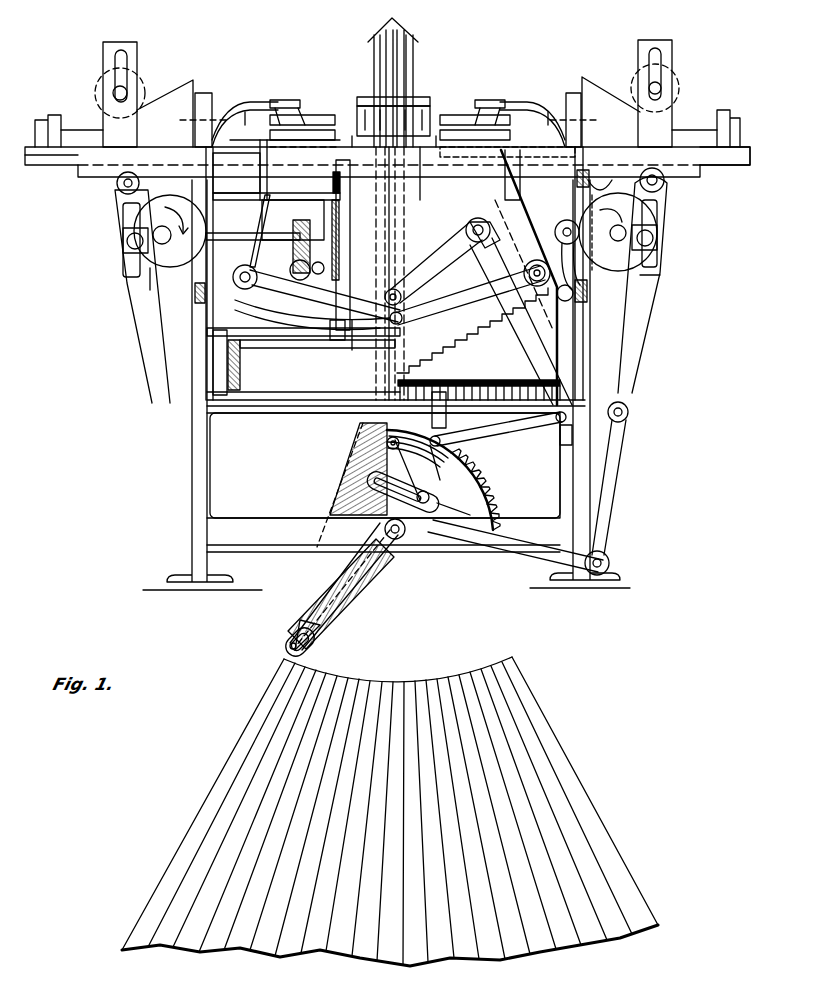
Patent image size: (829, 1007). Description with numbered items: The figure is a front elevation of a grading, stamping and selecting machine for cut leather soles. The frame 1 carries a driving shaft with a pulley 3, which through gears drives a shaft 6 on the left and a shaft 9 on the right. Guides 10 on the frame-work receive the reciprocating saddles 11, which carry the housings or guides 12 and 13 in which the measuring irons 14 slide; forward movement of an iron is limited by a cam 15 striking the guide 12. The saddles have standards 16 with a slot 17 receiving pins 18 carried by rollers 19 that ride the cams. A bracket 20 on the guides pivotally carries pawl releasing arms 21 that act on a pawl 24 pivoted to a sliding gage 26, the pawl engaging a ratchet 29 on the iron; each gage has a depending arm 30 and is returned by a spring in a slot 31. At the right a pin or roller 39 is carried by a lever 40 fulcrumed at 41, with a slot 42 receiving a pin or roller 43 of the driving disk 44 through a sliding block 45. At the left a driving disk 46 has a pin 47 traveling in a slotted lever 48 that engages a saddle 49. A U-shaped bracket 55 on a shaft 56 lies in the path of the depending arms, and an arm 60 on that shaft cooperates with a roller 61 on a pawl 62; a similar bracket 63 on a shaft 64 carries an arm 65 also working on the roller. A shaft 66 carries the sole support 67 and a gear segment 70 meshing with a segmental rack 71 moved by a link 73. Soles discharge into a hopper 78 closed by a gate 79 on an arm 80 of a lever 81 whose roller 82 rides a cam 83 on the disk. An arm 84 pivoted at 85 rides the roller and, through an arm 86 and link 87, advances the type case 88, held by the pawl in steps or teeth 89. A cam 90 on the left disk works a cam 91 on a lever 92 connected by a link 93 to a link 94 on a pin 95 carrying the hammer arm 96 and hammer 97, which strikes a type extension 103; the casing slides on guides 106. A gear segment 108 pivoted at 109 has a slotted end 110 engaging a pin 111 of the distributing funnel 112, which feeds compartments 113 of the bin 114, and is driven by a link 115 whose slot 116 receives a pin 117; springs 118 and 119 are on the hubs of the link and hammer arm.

The frame 1 is at (193, 468).
The pulley 3 is at (293, 220).
The shaft 6 is at (125, 222).
The shaft 9 is at (605, 240).
The guides 10 is at (85, 177).
The saddles 11 is at (745, 150).
The housing or guide 12 is at (203, 93).
The housing or guide 13 is at (52, 116).
The measuring irons 14 is at (478, 125).
The cam 15 is at (160, 98).
The standards 16 is at (118, 44).
The slot 17 is at (118, 58).
The pins 18 is at (113, 95).
The rollers 19 is at (98, 80).
The bracket 20 is at (258, 108).
The pawl releasing arms 21 is at (290, 100).
The pawl 24 is at (280, 103).
The sliding gage 26 is at (310, 115).
The ratchet 29 is at (255, 100).
The depending arm 30 is at (500, 160).
The slot 31 is at (250, 140).
The pin or roller 39 is at (665, 190).
The lever 40 is at (640, 305).
The fulcrum 41 is at (628, 412).
The slot 42 is at (645, 275).
The pin or roller 43 is at (660, 240).
The driving disk 44 is at (613, 243).
The sliding block 45 is at (660, 220).
The driving disk 46 is at (170, 246).
The pin 47 is at (120, 246).
The slotted lever 48 is at (135, 305).
The saddle 49 is at (55, 170).
The bracket 55 is at (520, 190).
The shaft 56 is at (530, 272).
The arm 60 is at (460, 308).
The roller 61 is at (450, 262).
The pawl 62 is at (403, 315).
The bracket 63 is at (155, 288).
The shaft 64 is at (242, 287).
The arm 65 is at (262, 312).
The shaft 66 is at (240, 195).
The support 67 is at (368, 148).
The gear segment 70 is at (333, 180).
The segmental rack 71 is at (345, 230).
The link 73 is at (350, 350).
The hopper or discharge conduit 78 is at (428, 178).
The valve or gate 79 is at (480, 430).
The arm 80 is at (453, 480).
The lever 81 is at (560, 340).
The roller 82 is at (563, 226).
The cam 83 is at (598, 170).
The arm 84 is at (468, 236).
The pivot 85 is at (482, 226).
The arm 86 is at (495, 275).
The link 87 is at (555, 428).
The type case 88 is at (505, 386).
The steps or teeth 89 is at (472, 330).
The cam 90 is at (180, 225).
The cam 91 is at (258, 210).
The lever 92 is at (265, 250).
The link 93 is at (340, 335).
The link 94 is at (280, 348).
The pin 95 is at (207, 320).
The hammer arm 96 is at (300, 395).
The hammer 97 is at (370, 405).
The rearward extension 103 is at (440, 392).
The guides 106 is at (300, 415).
The gear segment 108 is at (500, 500).
The pivot 109 is at (380, 545).
The slotted end 110 is at (322, 617).
The pin 111 is at (305, 642).
The distributing funnel 112 is at (318, 560).
The compartments 113 is at (365, 683).
The bin 114 is at (205, 793).
The link 115 is at (535, 552).
The slot 116 is at (368, 478).
The pin 117 is at (412, 492).
The spring 118 is at (215, 385).
The spring 119 is at (213, 350).